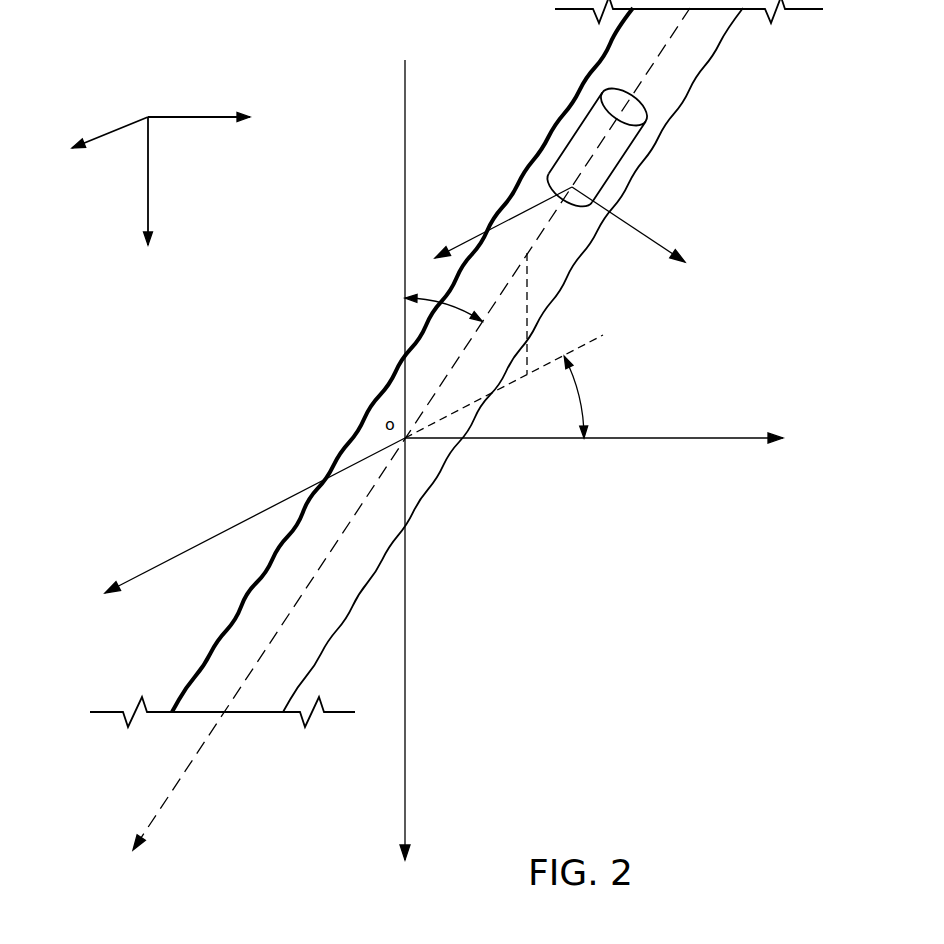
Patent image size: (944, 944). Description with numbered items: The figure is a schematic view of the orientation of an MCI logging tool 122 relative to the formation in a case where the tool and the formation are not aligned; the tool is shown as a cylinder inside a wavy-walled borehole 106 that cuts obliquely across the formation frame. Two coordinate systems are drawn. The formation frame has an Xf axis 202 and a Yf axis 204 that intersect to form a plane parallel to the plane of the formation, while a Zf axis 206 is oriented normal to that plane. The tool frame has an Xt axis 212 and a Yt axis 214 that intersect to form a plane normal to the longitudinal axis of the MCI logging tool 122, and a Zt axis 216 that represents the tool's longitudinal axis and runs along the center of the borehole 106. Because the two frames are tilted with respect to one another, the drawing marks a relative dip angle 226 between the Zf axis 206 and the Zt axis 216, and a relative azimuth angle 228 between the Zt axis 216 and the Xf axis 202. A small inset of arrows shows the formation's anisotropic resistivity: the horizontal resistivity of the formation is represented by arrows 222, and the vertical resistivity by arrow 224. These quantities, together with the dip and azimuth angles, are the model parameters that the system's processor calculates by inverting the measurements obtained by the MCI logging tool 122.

The borehole 106 is at (562, 115).
The MCI logging tool 122 is at (618, 155).
The Xf axis 202 is at (675, 440).
The Yf axis 204 is at (262, 512).
The Zf axis 206 is at (406, 737).
The Xt axis 212 is at (663, 240).
The Yt axis 214 is at (465, 238).
The Zt axis 216 is at (178, 783).
The arrows 222 is at (118, 128).
The arrow 224 is at (148, 173).
The relative dip angle 226 is at (407, 297).
The relative azimuth angle 228 is at (582, 398).